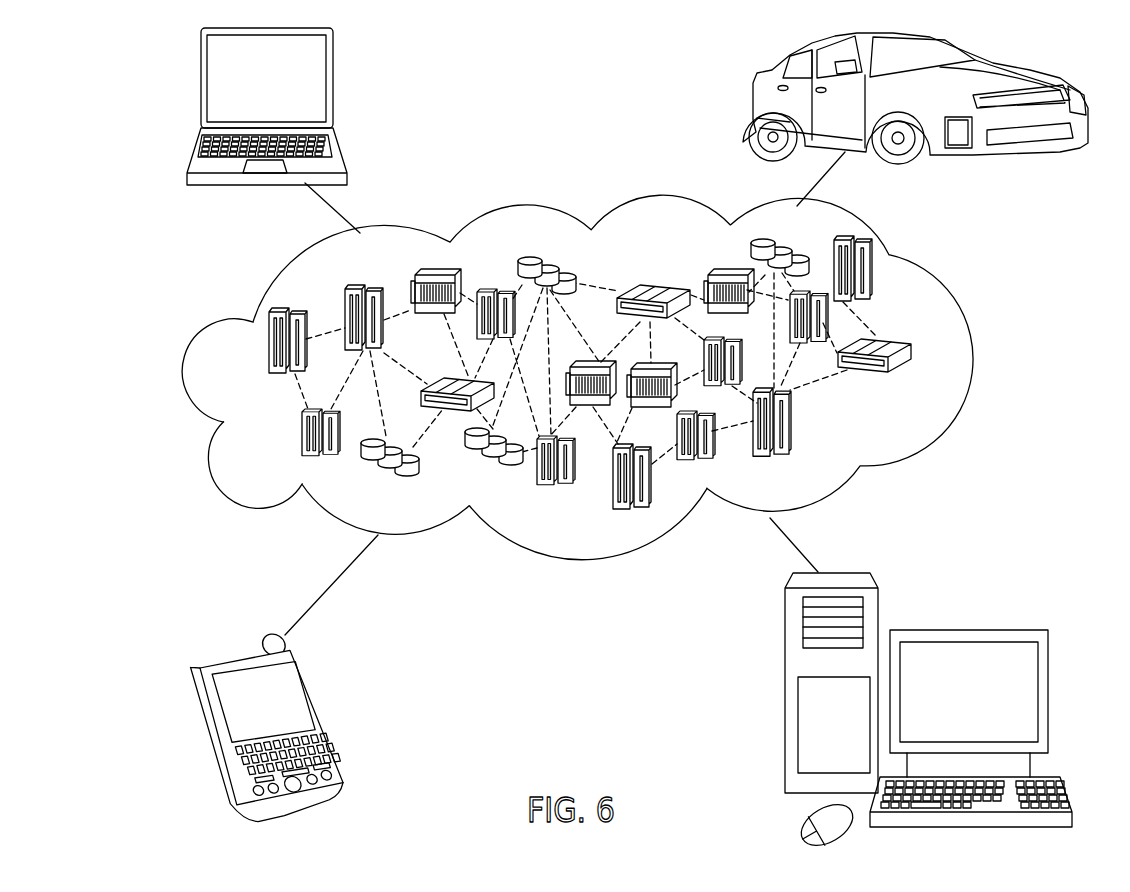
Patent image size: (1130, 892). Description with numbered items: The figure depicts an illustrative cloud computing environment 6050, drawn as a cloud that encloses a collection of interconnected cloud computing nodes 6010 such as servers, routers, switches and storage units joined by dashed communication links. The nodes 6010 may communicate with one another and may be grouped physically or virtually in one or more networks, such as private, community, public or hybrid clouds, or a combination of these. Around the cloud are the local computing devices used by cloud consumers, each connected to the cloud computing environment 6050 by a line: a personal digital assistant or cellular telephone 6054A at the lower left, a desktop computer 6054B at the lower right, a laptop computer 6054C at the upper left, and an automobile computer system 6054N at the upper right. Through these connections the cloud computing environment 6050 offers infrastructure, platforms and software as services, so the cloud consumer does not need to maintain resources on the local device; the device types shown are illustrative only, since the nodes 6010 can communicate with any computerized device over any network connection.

The laptop computer 6054C is at (333, 86).
The automobile computer system 6054N is at (755, 101).
The personal digital assistant (PDA) or cellular telephone 6054A is at (322, 717).
The desktop computer 6054B is at (965, 630).
The cloud computing environment 6050 is at (968, 352).
The cloud computing node 6010 is at (912, 382).